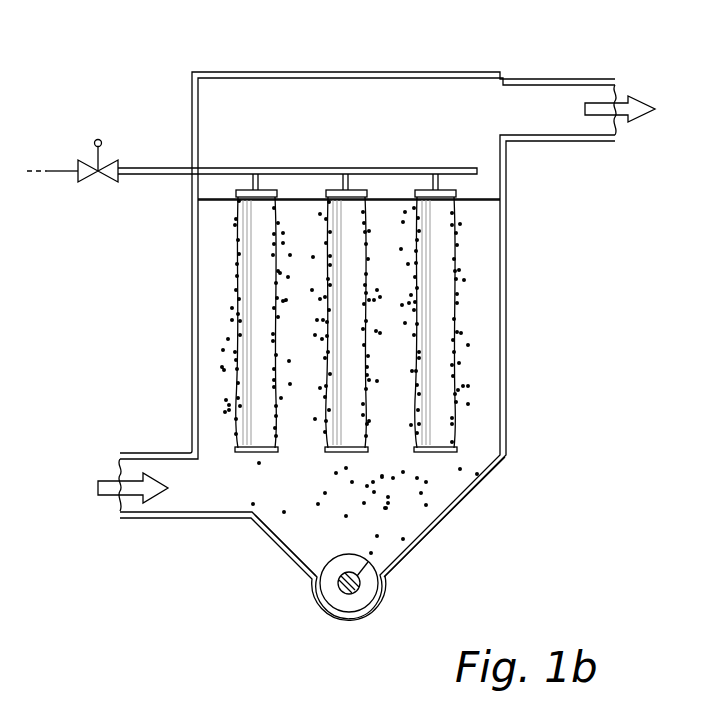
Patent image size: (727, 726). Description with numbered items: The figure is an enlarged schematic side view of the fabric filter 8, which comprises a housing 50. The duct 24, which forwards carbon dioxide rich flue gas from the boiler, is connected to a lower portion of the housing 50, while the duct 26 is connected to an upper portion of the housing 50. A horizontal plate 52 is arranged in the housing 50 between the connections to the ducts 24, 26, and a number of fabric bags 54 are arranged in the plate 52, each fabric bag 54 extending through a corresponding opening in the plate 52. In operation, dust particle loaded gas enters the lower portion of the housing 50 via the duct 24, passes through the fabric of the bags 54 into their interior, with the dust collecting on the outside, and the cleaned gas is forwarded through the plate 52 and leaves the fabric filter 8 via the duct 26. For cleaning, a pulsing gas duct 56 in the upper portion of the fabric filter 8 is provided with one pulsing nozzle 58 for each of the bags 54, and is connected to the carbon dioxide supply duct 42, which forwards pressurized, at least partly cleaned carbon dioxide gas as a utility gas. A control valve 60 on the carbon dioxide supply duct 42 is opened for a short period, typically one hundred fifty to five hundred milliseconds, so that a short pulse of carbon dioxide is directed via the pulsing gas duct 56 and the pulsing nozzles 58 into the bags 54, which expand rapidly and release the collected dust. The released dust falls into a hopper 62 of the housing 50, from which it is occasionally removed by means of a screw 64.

The fabric filter 8 is at (180, 90).
The duct 24 is at (140, 518).
The duct 26 is at (560, 78).
The carbon dioxide supply duct 42 is at (62, 170).
The housing 50 is at (505, 250).
The horizontal plate 52 is at (213, 200).
The fabric bags 54 is at (243, 342).
The pulsing gas duct 56 is at (293, 168).
The pulsing nozzle 58 is at (442, 172).
The control valve 60 is at (110, 160).
The hopper 62 is at (268, 540).
The screw 64 is at (353, 600).